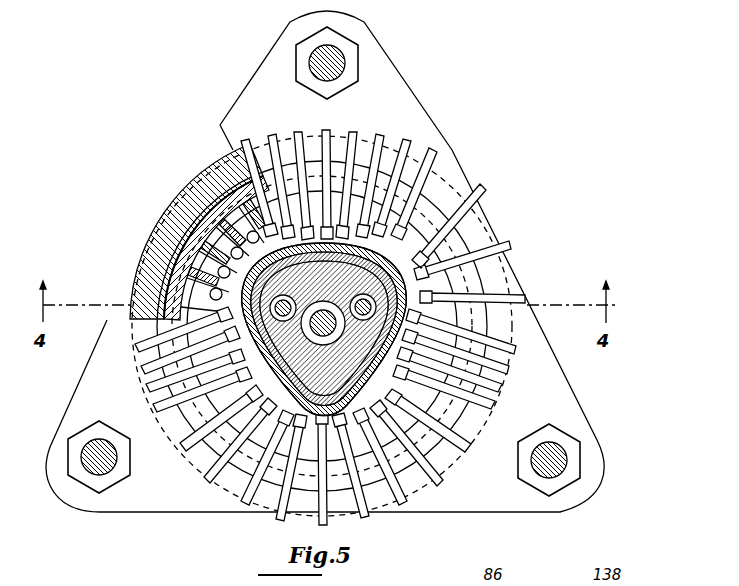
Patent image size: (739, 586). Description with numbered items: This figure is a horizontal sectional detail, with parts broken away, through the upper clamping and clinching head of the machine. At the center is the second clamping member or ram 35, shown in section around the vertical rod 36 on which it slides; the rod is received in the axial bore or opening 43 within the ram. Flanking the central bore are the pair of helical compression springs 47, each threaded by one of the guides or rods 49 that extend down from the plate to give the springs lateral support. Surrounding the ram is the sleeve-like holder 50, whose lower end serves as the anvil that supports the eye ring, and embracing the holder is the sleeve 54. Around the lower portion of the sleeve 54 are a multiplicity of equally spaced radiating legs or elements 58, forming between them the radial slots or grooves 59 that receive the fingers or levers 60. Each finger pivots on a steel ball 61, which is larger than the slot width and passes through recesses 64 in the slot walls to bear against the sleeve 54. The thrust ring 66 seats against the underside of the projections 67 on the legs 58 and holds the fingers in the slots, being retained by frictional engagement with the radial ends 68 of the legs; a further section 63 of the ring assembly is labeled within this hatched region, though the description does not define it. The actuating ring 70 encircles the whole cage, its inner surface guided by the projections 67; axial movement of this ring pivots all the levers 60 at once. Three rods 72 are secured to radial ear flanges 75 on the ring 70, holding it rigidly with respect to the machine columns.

The rods 72 is at (324, 259).
The radial ear flanges 75 is at (565, 390).
The fingers or levers 60 is at (346, 327).
The projections 67 is at (322, 295).
The radiating legs or elements 58 is at (286, 243).
The radial slots or grooves 59 is at (363, 323).
The thrust ring 66 is at (212, 157).
The radial ends 68 is at (183, 190).
The ring section 63 is at (216, 247).
The recesses 64 is at (213, 270).
The balls 61 is at (198, 265).
The actuating ring 70 is at (303, 326).
The guides or rods 49 is at (323, 294).
The helical compression springs 47 is at (323, 304).
The sleeve-like holder 50 is at (301, 326).
The axial bore or opening 43 is at (360, 349).
The vertical rod 36 is at (324, 329).
The second clamping member or ram 35 is at (324, 329).
The sleeve 54 is at (324, 328).